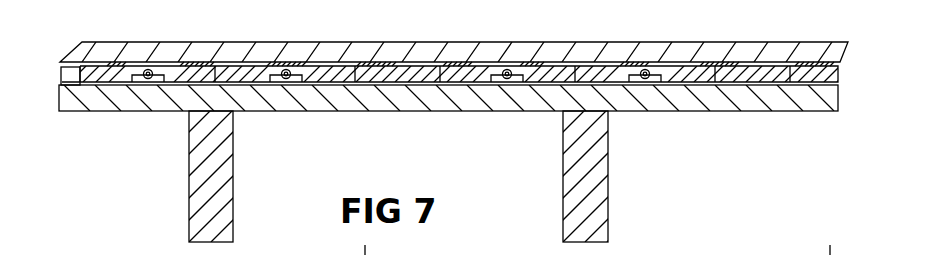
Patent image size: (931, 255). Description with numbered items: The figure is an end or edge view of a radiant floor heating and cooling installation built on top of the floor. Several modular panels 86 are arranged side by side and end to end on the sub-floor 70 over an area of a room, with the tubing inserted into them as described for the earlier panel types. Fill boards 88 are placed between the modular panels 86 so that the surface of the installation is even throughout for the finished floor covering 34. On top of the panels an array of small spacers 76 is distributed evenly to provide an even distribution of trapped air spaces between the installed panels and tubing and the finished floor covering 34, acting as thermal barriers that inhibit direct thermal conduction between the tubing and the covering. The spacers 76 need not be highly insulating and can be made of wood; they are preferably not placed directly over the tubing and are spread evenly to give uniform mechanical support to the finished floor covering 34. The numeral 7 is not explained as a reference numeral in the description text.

The support leg 7 is at (233, 177).
The finished floor covering 34 is at (72, 53).
The sub-floor 70 is at (665, 103).
The spacers 76 is at (120, 64).
The modular panels 86 is at (48, 78).
The fill boards 88 is at (410, 78).